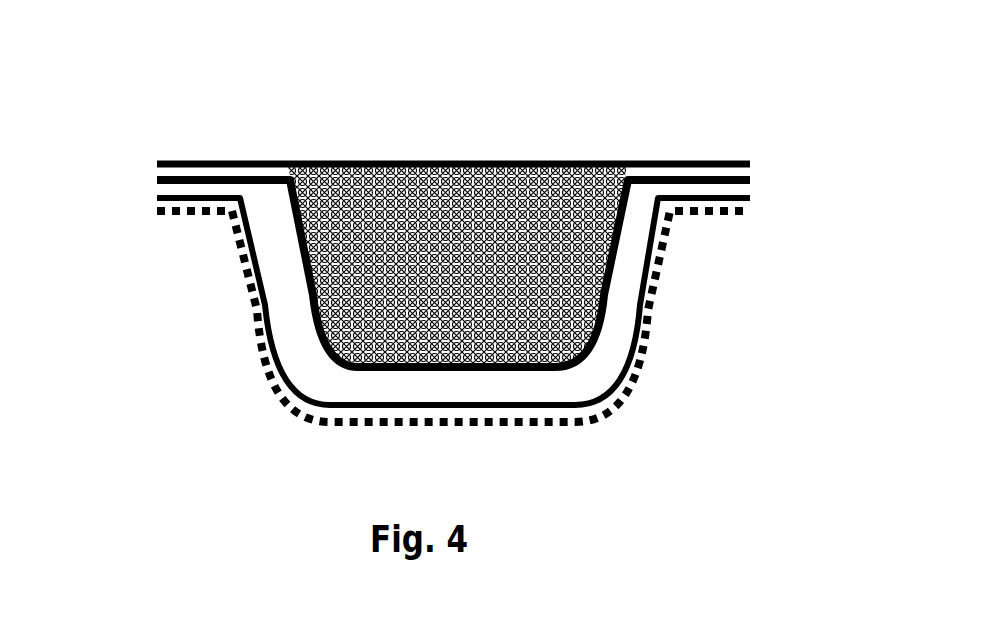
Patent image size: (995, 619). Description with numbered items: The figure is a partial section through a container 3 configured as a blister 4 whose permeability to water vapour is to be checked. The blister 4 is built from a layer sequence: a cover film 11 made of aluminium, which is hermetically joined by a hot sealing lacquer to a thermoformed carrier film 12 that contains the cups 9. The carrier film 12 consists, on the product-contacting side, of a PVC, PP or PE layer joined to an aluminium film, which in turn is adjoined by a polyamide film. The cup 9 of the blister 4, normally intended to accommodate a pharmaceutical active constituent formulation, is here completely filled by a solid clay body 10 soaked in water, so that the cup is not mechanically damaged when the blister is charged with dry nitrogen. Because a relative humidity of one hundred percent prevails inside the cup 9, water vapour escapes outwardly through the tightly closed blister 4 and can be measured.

The container 3 is at (183, 133).
The blister 4 is at (698, 155).
The cup 9 is at (613, 160).
The solid clay body 10 is at (393, 200).
The cover film 11 is at (265, 160).
The carrier film 12 is at (233, 278).